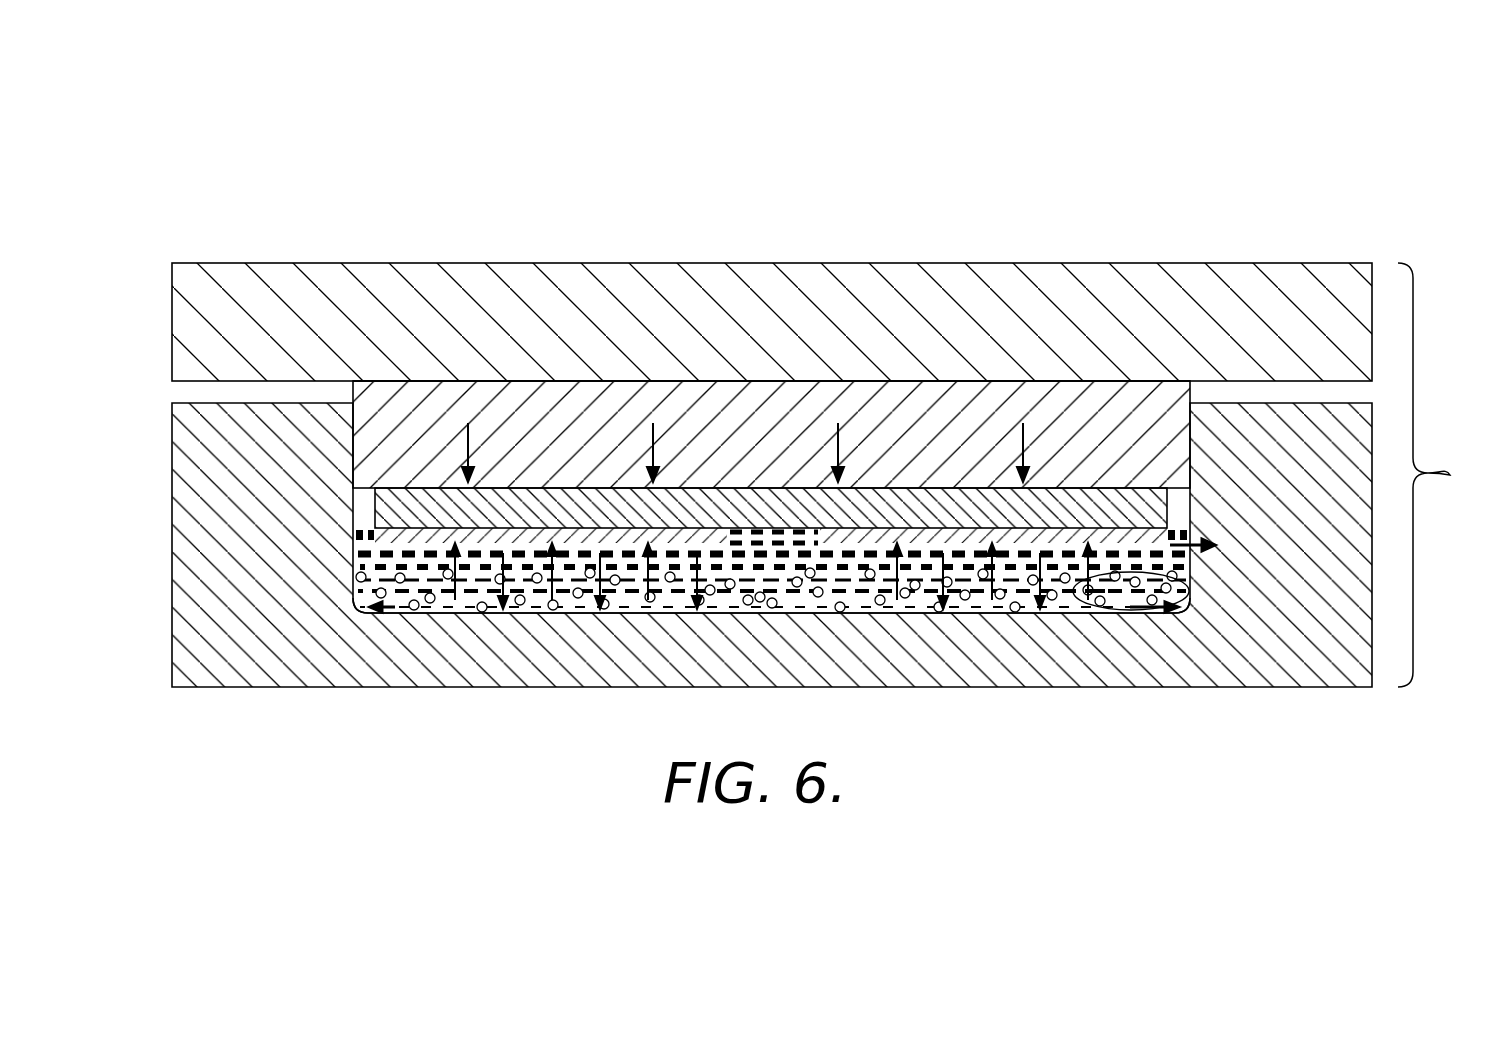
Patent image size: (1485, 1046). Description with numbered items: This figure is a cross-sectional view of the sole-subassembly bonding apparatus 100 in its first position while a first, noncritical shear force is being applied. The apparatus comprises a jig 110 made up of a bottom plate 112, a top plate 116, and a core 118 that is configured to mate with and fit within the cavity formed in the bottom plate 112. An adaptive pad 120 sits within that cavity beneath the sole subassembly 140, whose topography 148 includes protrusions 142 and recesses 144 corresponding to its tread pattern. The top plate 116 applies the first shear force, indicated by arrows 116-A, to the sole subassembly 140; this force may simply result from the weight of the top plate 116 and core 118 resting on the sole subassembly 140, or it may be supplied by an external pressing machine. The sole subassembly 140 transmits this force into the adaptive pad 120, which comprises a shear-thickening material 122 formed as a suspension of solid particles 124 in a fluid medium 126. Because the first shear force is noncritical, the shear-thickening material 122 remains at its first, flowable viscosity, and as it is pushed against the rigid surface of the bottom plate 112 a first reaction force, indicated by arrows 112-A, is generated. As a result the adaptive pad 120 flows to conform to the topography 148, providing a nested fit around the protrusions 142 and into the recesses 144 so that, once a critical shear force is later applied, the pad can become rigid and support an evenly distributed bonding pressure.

The sole-subassembly bonding apparatus 100 is at (677, 192).
The jig 110 is at (1435, 475).
The bottom plate 112 is at (178, 432).
The arrows indicating first reaction force 112-A is at (412, 592).
The top plate 116 is at (243, 292).
The arrows indicating first shear force 116-A is at (1020, 442).
The core 118 is at (408, 446).
The adaptive pad 120 is at (347, 553).
The shear-thickening material 122 is at (1098, 604).
The solid particles 124 is at (1097, 575).
The fluid medium 126 is at (1115, 600).
The sole subassembly 140 is at (1130, 503).
The protrusions 142 is at (862, 565).
The recesses 144 is at (553, 535).
The topography 148 is at (397, 555).